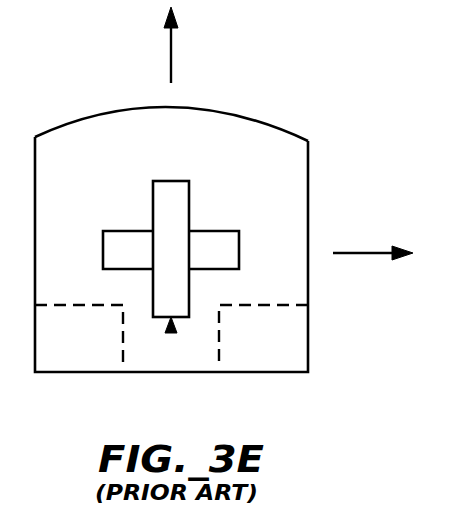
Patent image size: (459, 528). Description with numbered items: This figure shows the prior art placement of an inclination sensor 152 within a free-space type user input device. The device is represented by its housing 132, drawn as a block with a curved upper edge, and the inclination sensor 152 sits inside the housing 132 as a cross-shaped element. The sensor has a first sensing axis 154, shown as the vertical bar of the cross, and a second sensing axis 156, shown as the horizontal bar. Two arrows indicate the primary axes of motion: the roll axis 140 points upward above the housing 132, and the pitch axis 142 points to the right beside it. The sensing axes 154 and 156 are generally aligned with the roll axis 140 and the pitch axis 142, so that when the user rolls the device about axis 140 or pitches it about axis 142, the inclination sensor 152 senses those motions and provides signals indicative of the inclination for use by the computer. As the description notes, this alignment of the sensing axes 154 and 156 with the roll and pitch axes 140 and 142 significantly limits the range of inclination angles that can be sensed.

The housing portion 132 is at (120, 124).
The roll axis 140 is at (172, 58).
The pitch axis 142 is at (348, 254).
The inclination sensor 152 is at (171, 331).
The first sensing axis 154 is at (178, 203).
The second sensing axis 156 is at (229, 243).